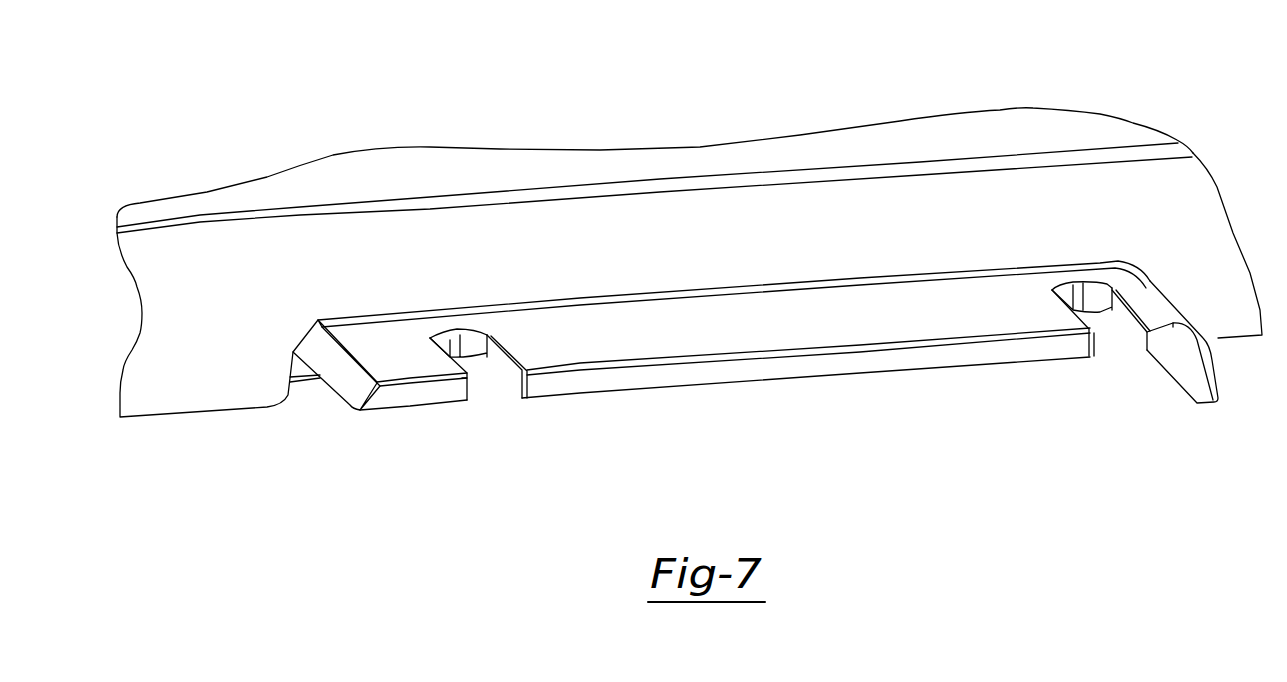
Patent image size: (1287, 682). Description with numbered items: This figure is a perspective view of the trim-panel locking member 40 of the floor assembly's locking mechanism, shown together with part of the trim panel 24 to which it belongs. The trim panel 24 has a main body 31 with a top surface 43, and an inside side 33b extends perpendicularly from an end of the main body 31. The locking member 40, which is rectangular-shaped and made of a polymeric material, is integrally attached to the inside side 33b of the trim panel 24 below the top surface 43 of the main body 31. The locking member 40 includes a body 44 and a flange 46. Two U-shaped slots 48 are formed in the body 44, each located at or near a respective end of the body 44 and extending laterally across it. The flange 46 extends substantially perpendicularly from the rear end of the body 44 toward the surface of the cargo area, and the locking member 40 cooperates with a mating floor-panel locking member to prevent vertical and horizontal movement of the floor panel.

The trim panel 24 is at (667, 221).
The main body 31 is at (1132, 95).
The inside side 33b is at (1197, 205).
The trim-panel locking member 40 is at (755, 375).
The top surface 43 is at (1043, 135).
The body 44 is at (748, 315).
The flange 46 is at (1182, 363).
The U-shaped slot 48 is at (488, 382).